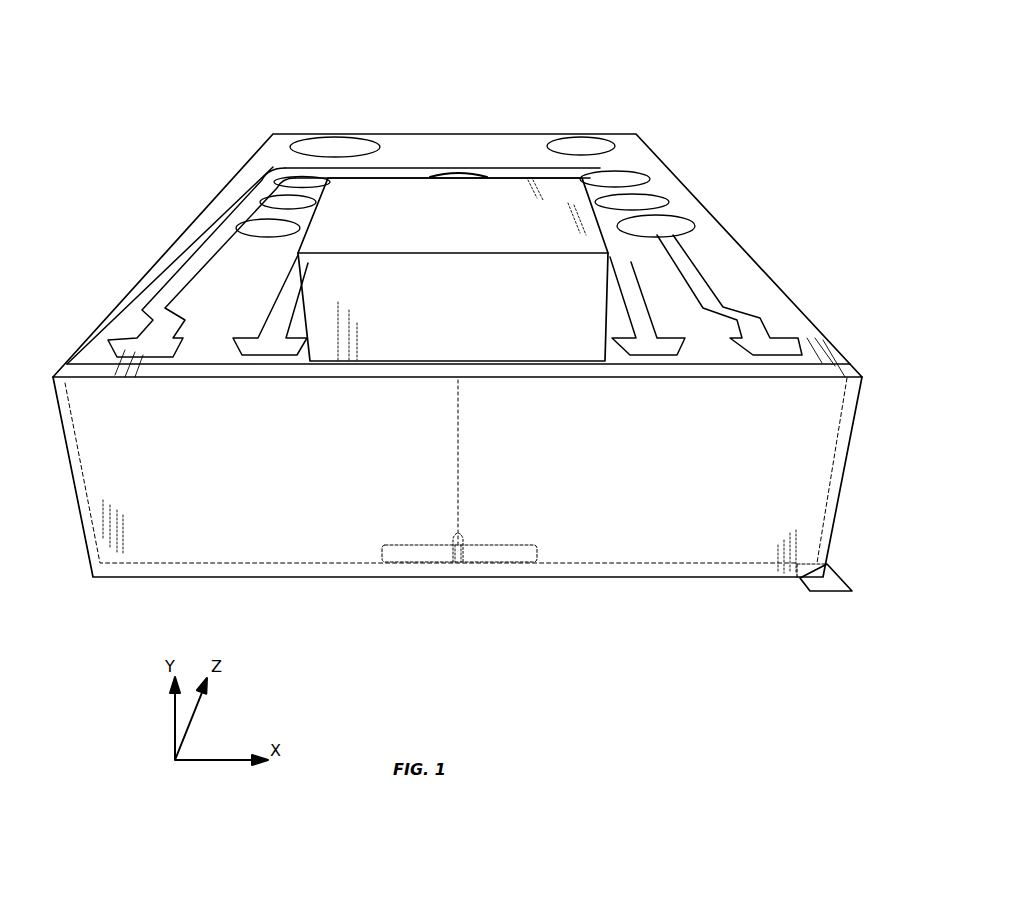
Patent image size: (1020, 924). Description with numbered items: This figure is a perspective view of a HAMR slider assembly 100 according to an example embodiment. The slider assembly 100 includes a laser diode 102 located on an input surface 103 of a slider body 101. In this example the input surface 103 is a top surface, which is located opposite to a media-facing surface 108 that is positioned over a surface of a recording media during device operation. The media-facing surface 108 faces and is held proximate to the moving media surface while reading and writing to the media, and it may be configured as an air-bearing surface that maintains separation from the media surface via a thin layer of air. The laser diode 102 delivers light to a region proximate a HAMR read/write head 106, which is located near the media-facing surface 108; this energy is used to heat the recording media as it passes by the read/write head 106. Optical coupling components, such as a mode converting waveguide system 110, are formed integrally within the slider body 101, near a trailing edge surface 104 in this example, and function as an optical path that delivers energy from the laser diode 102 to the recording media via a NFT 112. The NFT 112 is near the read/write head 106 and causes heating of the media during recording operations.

The HAMR slider assembly 100 is at (650, 57).
The slider body 101 is at (248, 165).
The laser diode 102 is at (413, 186).
The input surface 103 is at (122, 323).
The trailing edge surface 104 is at (157, 552).
The HAMR read/write head 106 is at (465, 563).
The media-facing surface 108 is at (842, 593).
The mode converting waveguide system 110 is at (458, 453).
The NFT 112 is at (458, 563).